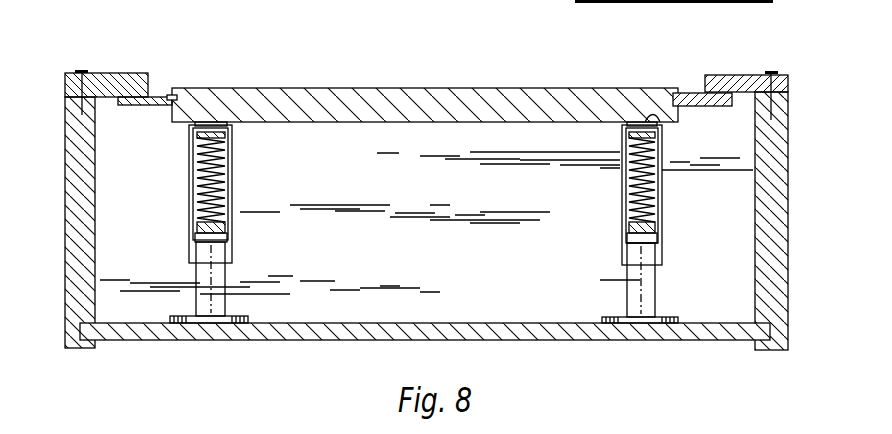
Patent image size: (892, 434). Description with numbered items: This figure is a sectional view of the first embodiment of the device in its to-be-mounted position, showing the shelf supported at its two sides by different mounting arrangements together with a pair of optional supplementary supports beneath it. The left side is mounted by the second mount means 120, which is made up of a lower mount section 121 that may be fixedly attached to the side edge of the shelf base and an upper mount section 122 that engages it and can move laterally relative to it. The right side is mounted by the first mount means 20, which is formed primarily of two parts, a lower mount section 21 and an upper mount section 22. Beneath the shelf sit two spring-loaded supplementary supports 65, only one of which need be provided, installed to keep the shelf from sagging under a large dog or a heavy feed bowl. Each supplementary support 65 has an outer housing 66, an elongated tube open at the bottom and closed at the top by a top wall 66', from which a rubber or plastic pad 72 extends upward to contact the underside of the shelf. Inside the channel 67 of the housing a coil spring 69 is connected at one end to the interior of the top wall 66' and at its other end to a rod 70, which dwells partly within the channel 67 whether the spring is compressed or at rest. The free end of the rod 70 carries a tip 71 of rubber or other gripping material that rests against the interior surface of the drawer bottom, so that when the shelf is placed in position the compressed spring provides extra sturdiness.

The mounting means 20 is at (672, 75).
The lower mount section 21 is at (703, 104).
The upper mount section 22 is at (727, 74).
The supplementary support 65 is at (250, 189).
The outer housing 66 is at (617, 229).
The top wall 66' is at (684, 138).
The channel 67 is at (660, 212).
The coil spring 69 is at (656, 193).
The rod 70 is at (646, 280).
The tip 71 is at (608, 317).
The pad 72 is at (622, 124).
The second mount means 120 is at (426, 81).
The lower mount section 121 is at (156, 106).
The upper mount section 122 is at (108, 73).